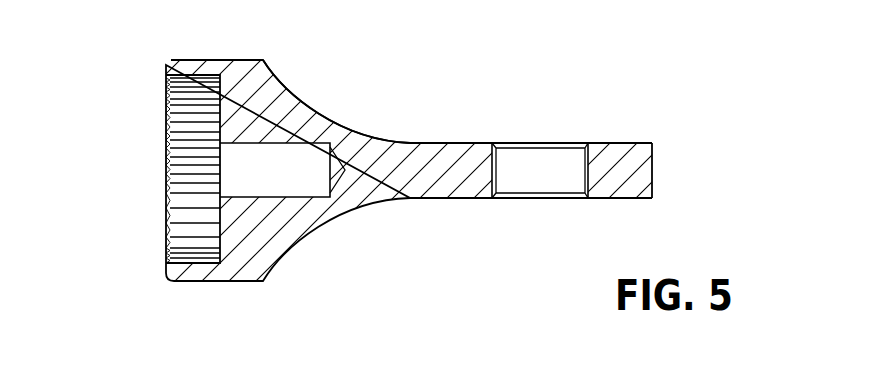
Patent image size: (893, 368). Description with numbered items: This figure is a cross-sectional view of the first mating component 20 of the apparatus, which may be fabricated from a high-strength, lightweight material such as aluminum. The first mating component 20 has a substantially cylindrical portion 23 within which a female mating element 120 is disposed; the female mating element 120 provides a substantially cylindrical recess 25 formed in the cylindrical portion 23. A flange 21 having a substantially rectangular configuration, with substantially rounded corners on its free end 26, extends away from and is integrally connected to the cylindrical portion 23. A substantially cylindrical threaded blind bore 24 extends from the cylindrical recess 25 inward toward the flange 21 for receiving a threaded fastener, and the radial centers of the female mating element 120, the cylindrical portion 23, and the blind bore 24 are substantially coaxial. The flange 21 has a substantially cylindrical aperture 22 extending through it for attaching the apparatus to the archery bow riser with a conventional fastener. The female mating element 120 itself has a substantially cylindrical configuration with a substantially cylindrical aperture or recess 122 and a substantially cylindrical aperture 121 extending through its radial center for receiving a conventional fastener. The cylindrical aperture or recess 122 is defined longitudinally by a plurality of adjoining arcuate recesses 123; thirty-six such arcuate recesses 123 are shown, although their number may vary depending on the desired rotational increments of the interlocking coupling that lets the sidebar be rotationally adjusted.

The first mating component 20 is at (708, 138).
The flange 21 is at (427, 200).
The cylindrical aperture 22 is at (525, 143).
The cylindrical portion 23 is at (207, 282).
The threaded blind bore 24 is at (263, 142).
The cylindrical recess 25 is at (222, 112).
The free end 26 is at (652, 167).
The female mating element 120 is at (193, 148).
The cylindrical aperture 121 is at (213, 183).
The cylindrical aperture or recess 122 is at (177, 140).
The arcuate recesses 123 is at (183, 107).